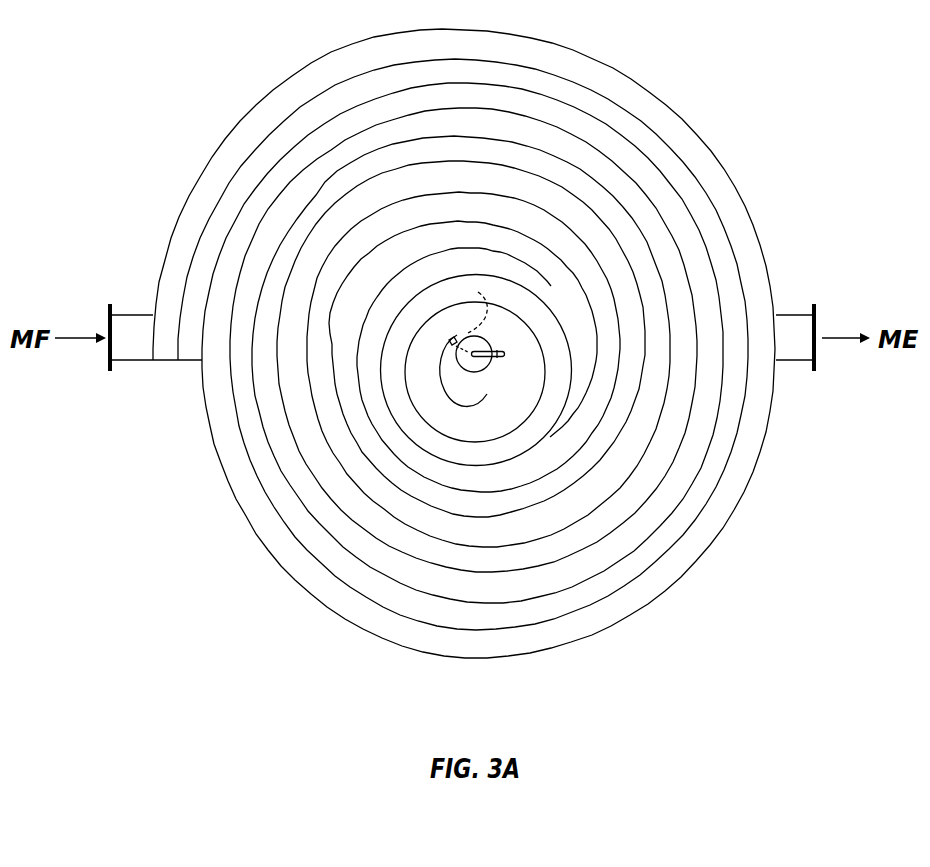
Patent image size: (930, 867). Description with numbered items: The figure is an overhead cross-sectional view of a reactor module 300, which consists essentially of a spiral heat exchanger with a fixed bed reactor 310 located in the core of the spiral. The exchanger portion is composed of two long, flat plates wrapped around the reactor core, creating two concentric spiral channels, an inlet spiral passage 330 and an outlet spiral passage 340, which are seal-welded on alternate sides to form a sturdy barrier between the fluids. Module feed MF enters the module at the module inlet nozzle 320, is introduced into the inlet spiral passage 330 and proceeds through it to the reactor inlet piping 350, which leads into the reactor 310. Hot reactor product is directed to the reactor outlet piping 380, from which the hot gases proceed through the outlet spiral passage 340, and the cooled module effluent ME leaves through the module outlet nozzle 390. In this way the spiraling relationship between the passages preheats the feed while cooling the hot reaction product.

The reactor module 300 is at (470, 339).
The fixed bed reactor 310 is at (468, 371).
The module inlet nozzle 320 is at (131, 360).
The inlet spiral passage 330 is at (170, 250).
The outlet spiral passage 340 is at (766, 410).
The reactor inlet piping 350 is at (465, 306).
The reactor outlet piping 380 is at (493, 372).
The module outlet nozzle 390 is at (811, 303).